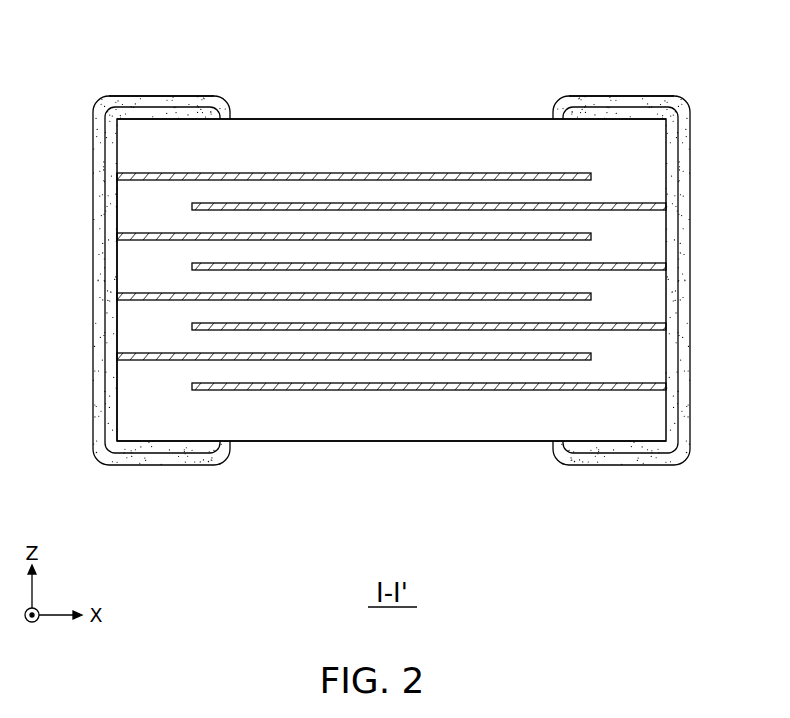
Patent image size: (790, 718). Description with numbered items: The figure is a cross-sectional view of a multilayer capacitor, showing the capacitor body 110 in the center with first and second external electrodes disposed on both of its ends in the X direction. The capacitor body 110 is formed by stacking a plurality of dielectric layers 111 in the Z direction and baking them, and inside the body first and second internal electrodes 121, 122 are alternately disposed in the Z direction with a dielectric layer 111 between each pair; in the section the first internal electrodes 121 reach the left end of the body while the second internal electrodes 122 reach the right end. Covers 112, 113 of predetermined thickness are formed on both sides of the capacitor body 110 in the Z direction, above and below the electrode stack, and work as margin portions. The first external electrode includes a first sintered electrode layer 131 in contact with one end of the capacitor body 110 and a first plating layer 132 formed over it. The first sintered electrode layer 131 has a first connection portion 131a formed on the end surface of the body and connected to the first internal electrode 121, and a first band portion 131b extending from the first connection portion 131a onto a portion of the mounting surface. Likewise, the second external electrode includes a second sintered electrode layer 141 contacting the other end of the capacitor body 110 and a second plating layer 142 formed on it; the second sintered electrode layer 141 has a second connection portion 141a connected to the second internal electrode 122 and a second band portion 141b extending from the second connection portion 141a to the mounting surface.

The capacitor body 110 is at (372, 118).
The dielectric layer 111 is at (472, 367).
The cover 112 is at (478, 143).
The cover 113 is at (528, 418).
The first internal electrode 121 is at (330, 356).
The second internal electrode 122 is at (370, 384).
The first sintered electrode layer 131 is at (147, 322).
The first connection portion 131a is at (110, 406).
The first band portion 131b is at (162, 312).
The first plating layer 132 is at (153, 100).
The second sintered electrode layer 141 is at (636, 322).
The second connection portion 141a is at (621, 280).
The second band portion 141b is at (673, 406).
The second plating layer 142 is at (628, 100).